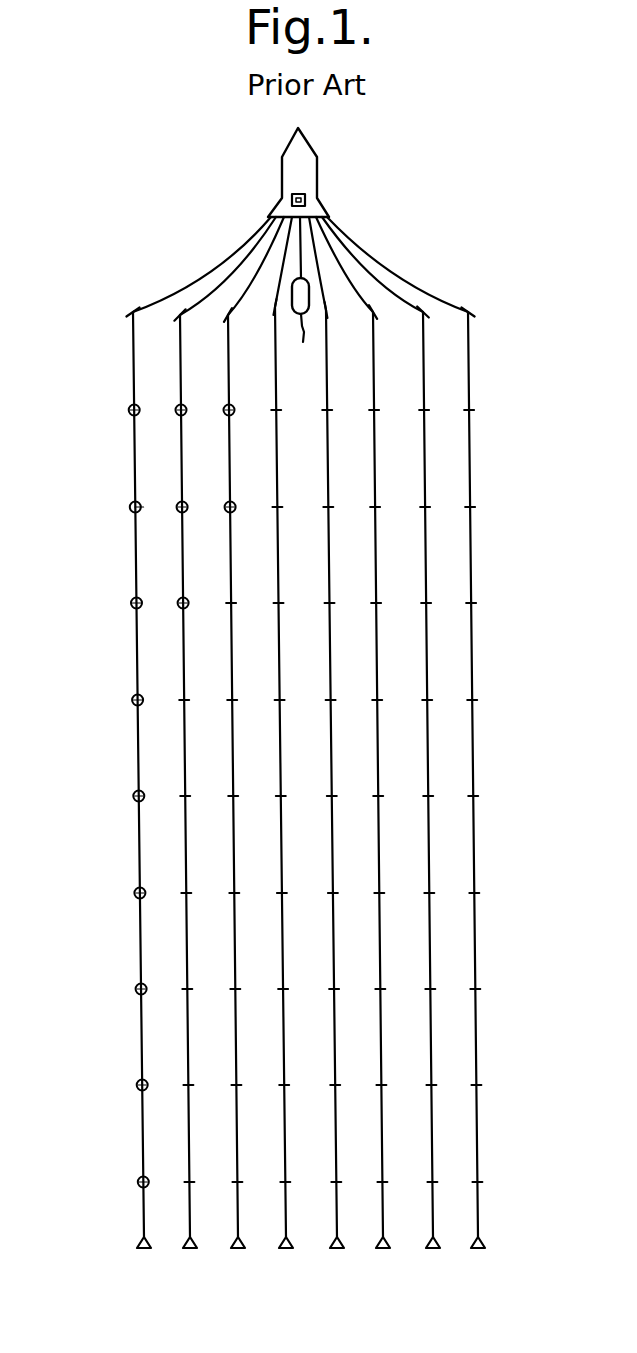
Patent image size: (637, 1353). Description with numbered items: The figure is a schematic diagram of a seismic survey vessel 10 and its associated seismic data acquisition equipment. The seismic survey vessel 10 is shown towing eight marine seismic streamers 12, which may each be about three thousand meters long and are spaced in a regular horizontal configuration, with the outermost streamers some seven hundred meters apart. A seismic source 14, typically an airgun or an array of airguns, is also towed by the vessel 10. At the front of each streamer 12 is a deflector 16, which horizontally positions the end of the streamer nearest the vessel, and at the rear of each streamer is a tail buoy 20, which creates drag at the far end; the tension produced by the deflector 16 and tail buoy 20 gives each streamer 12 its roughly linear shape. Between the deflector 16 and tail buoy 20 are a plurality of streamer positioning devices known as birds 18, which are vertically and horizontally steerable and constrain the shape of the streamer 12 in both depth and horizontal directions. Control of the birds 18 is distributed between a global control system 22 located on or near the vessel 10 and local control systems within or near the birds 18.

The seismic survey vessel 10 is at (312, 177).
The global control system 22 is at (305, 200).
The seismic source 14 is at (303, 294).
The deflector 16 is at (133, 309).
The marine seismic streamer 12 is at (133, 358).
The bird 18 is at (134, 505).
The tail buoy 20 is at (145, 1250).